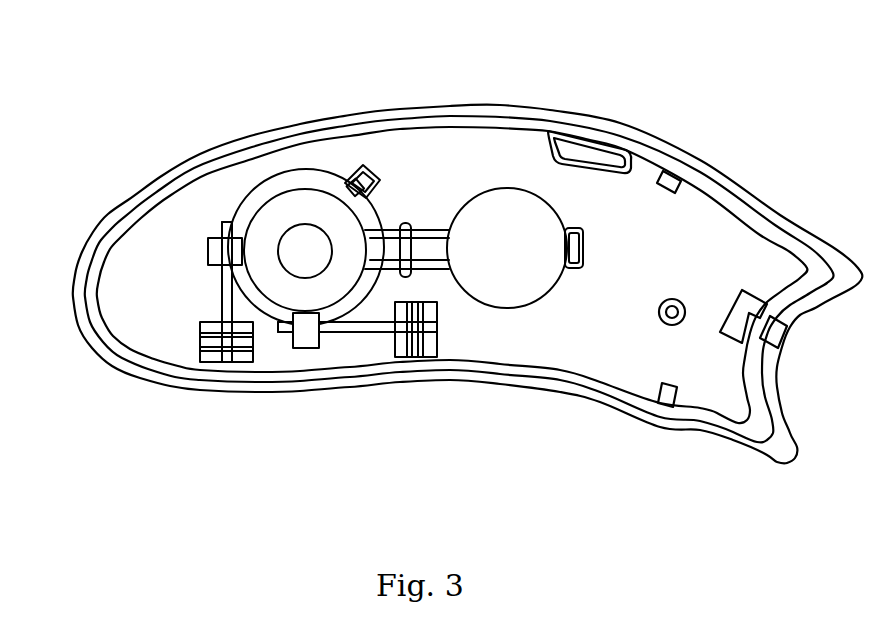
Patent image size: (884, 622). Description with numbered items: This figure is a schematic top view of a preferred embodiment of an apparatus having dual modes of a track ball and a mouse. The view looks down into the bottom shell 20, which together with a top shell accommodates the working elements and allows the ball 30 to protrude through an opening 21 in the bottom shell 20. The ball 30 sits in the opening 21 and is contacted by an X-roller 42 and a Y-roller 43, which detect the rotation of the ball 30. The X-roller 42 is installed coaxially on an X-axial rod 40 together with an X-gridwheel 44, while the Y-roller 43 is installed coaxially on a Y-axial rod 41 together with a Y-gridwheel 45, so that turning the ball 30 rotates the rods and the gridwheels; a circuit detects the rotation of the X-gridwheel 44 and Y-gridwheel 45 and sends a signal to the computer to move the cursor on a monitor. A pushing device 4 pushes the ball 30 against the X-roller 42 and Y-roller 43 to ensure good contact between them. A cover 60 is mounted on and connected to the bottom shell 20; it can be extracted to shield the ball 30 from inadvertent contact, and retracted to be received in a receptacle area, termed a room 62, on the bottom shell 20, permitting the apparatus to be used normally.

The bottom shell 20 is at (130, 199).
The ball 30 is at (327, 172).
The cover 60 is at (291, 191).
The opening 21 is at (293, 247).
The pushing device 4 is at (375, 162).
The room 62 is at (531, 190).
The X-axial rod 40 is at (225, 300).
The X-roller 42 is at (213, 253).
The X-gridwheel 44 is at (207, 343).
The Y-roller 43 is at (305, 350).
The Y-axial rod 41 is at (355, 336).
The Y-gridwheel 45 is at (413, 357).